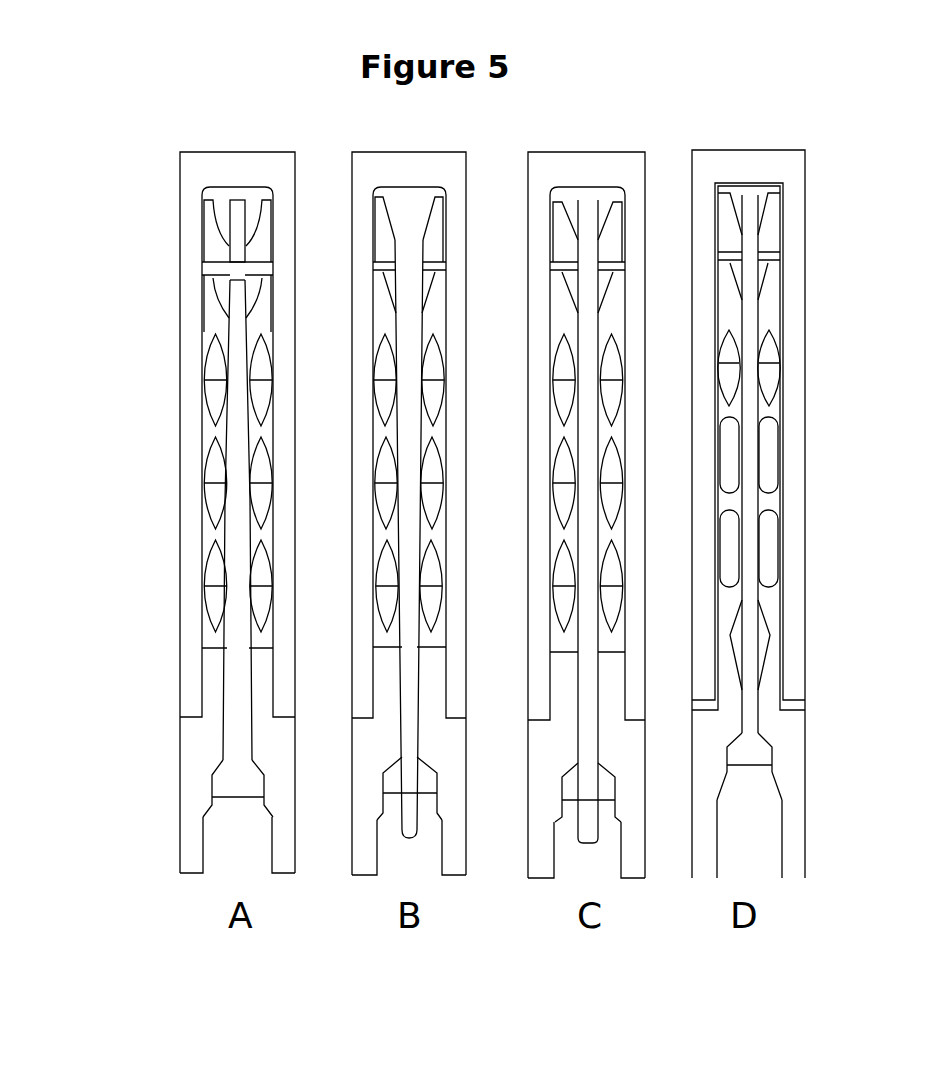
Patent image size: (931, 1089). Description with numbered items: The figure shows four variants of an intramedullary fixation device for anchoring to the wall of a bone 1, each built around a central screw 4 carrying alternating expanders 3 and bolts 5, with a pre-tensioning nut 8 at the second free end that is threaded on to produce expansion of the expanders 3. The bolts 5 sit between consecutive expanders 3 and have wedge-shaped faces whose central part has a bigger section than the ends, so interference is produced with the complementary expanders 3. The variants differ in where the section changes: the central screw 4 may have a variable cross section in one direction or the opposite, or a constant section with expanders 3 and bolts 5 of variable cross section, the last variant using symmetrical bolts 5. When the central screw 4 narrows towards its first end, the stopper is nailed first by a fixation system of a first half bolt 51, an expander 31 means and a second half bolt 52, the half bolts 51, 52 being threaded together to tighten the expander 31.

The bone 1 is at (192, 662).
The expanders 3 is at (210, 427).
The central screw 4 is at (240, 503).
The bolts 5 is at (218, 585).
The pre-tensioning nut 8 is at (240, 780).
The expander means 31 is at (212, 250).
The first half bolt 51 is at (225, 198).
The second half bolt 52 is at (223, 289).